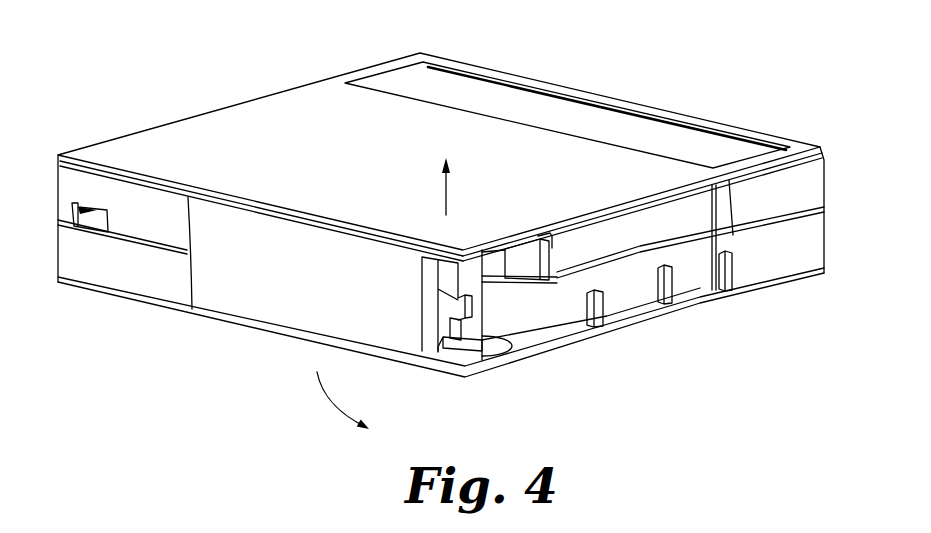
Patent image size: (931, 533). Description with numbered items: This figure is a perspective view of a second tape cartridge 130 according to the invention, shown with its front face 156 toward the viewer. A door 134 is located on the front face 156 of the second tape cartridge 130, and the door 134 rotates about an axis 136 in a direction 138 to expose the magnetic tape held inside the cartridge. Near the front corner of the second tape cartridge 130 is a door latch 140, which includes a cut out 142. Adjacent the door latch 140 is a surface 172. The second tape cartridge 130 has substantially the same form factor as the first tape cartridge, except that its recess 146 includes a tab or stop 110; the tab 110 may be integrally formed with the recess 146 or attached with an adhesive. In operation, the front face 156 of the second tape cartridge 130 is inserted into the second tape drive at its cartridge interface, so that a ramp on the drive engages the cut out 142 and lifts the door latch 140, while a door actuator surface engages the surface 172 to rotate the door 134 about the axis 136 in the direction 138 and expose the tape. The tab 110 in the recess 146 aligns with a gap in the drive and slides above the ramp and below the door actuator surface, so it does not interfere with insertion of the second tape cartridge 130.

The second tape cartridge 130 is at (217, 57).
The front face 156 is at (137, 280).
The door 134 is at (262, 307).
The door latch 140 is at (455, 307).
The cut out 142 is at (444, 336).
The surface 172 is at (463, 273).
The tab or stop 110 is at (538, 262).
The recess 146 is at (697, 277).
The axis 136 is at (438, 192).
The direction 138 is at (317, 372).